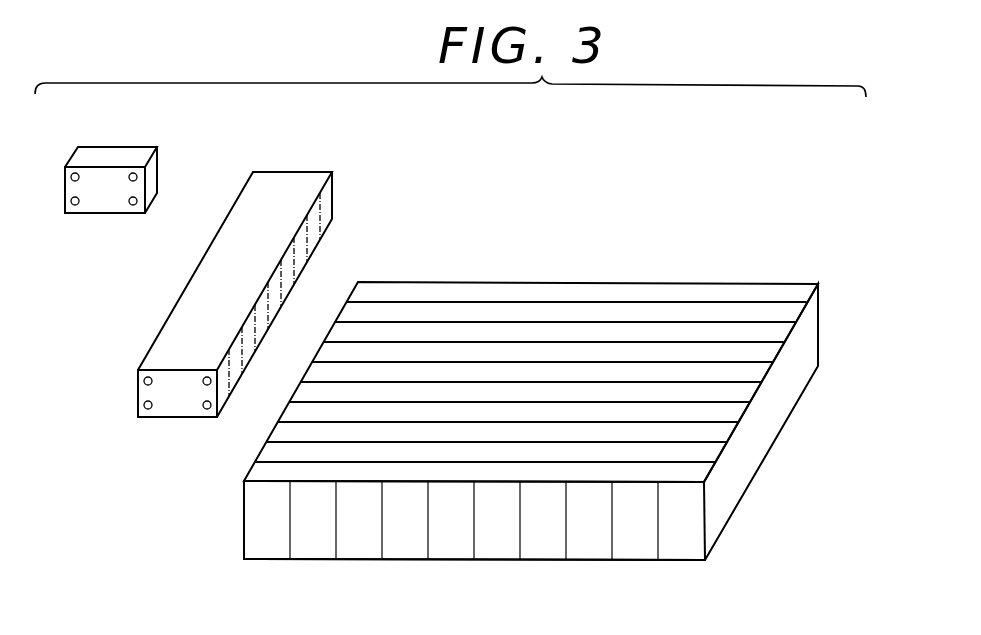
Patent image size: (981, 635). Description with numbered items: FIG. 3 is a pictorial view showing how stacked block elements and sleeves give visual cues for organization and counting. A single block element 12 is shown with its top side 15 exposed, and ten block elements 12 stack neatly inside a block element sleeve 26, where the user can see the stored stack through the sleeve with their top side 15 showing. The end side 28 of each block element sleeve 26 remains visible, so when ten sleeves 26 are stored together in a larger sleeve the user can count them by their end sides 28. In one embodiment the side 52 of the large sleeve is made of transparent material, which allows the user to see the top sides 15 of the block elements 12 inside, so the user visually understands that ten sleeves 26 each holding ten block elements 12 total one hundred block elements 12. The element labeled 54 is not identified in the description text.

The block element 12 is at (116, 134).
The top side 15 is at (157, 174).
The block element sleeve 26 is at (185, 262).
The end side 28 is at (165, 402).
The side of large sleeve 52 is at (332, 309).
The side face 54 is at (226, 496).